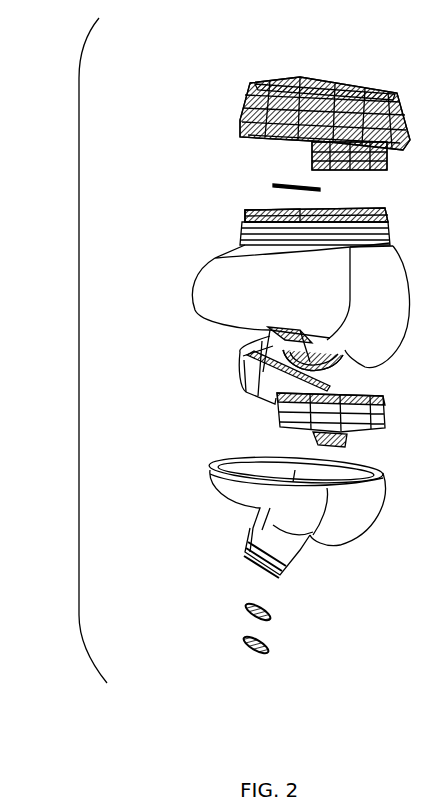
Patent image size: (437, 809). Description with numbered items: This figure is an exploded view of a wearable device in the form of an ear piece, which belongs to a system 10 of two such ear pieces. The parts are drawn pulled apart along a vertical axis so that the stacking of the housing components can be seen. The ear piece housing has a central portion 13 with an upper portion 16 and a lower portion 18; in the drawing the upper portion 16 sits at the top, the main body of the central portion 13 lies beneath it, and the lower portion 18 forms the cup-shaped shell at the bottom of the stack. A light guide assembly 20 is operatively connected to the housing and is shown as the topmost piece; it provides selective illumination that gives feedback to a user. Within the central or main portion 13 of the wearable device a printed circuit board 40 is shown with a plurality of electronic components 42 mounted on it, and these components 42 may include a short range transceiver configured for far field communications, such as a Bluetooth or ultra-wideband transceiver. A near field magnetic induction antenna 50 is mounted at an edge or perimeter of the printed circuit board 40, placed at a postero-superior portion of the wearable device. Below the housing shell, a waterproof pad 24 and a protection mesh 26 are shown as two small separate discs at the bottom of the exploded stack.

The system 10 is at (77, 367).
The central portion 13 is at (192, 287).
The upper portion 16 is at (238, 125).
The lower portion 18 is at (218, 336).
The light guide assembly 20 is at (370, 82).
The waterproof pad 24 is at (280, 618).
The protection mesh 26 is at (278, 650).
The printed circuit board 40 is at (250, 211).
The electronic components 42 is at (276, 211).
The near field magnetic induction antenna 50 is at (243, 218).